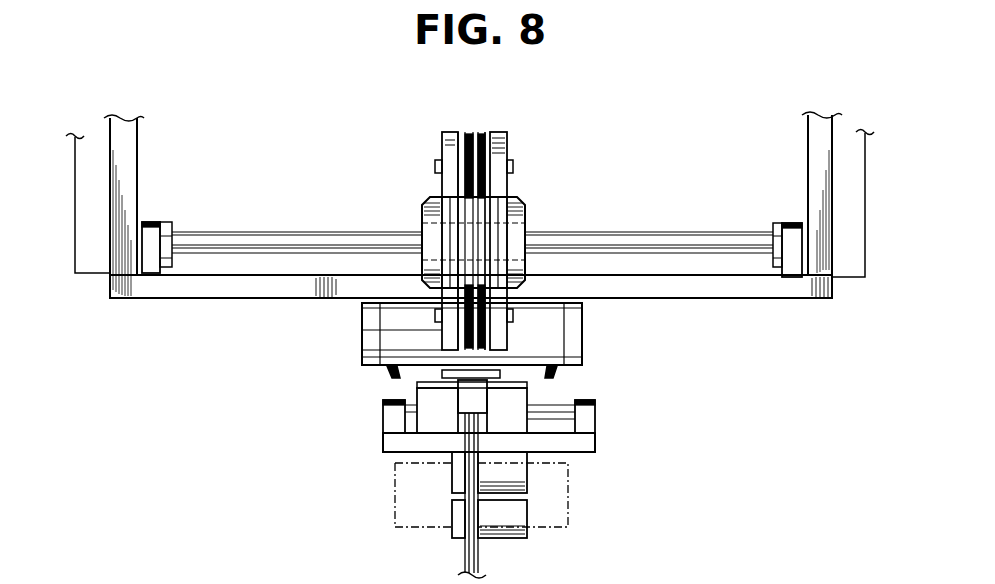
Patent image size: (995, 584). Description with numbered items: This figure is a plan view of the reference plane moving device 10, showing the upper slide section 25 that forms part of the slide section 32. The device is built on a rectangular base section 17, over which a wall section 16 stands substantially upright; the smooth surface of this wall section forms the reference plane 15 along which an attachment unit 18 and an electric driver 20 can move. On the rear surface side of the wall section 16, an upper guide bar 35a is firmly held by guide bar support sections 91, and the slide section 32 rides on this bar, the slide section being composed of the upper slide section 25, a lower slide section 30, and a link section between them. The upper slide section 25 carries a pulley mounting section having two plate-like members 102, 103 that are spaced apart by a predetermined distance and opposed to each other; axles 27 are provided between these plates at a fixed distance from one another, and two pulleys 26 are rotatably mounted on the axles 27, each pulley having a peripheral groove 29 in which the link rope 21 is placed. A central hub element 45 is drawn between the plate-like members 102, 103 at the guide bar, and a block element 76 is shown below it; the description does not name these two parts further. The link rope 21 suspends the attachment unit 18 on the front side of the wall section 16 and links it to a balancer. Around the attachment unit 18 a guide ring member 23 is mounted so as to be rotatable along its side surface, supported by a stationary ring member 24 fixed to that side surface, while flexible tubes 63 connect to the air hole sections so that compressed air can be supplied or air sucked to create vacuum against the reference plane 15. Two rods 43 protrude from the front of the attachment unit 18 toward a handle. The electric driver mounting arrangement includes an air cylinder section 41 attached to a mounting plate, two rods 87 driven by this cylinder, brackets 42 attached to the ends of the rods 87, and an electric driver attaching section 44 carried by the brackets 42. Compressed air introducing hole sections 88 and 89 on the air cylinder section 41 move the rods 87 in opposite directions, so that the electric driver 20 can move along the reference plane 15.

The reference plane moving device 10 is at (278, 472).
The reference plane 15 is at (183, 290).
The wall section 16 is at (750, 302).
The base section 17 is at (808, 160).
The attachment unit 18 is at (494, 287).
The electric driver 20 is at (555, 513).
The link rope 21 is at (470, 240).
The guide ring member 23 is at (363, 333).
The stationary ring member 24 is at (363, 357).
The upper slide section 25 is at (413, 135).
The pulleys 26 is at (492, 152).
The axles 27 is at (513, 167).
The peripheral groove 29 is at (472, 134).
The lower slide section 30 is at (511, 214).
The slide section 32 is at (333, 165).
The upper guide bar 35a is at (683, 234).
The air cylinder section 41 is at (435, 418).
The brackets 42 is at (392, 423).
The rods 43 is at (465, 555).
The electric driver attaching section 44 is at (520, 538).
The hub 45 is at (426, 205).
The flexible tubes 63 is at (385, 377).
The block top surface 76 is at (568, 300).
The rods 87 is at (580, 452).
The compressed air introducing hole section 88 is at (555, 421).
The compressed air introducing hole section 89 is at (402, 387).
The guide bar support sections 91 is at (156, 222).
The plate-like member 102 is at (510, 188).
The plate-like member 103 is at (440, 184).